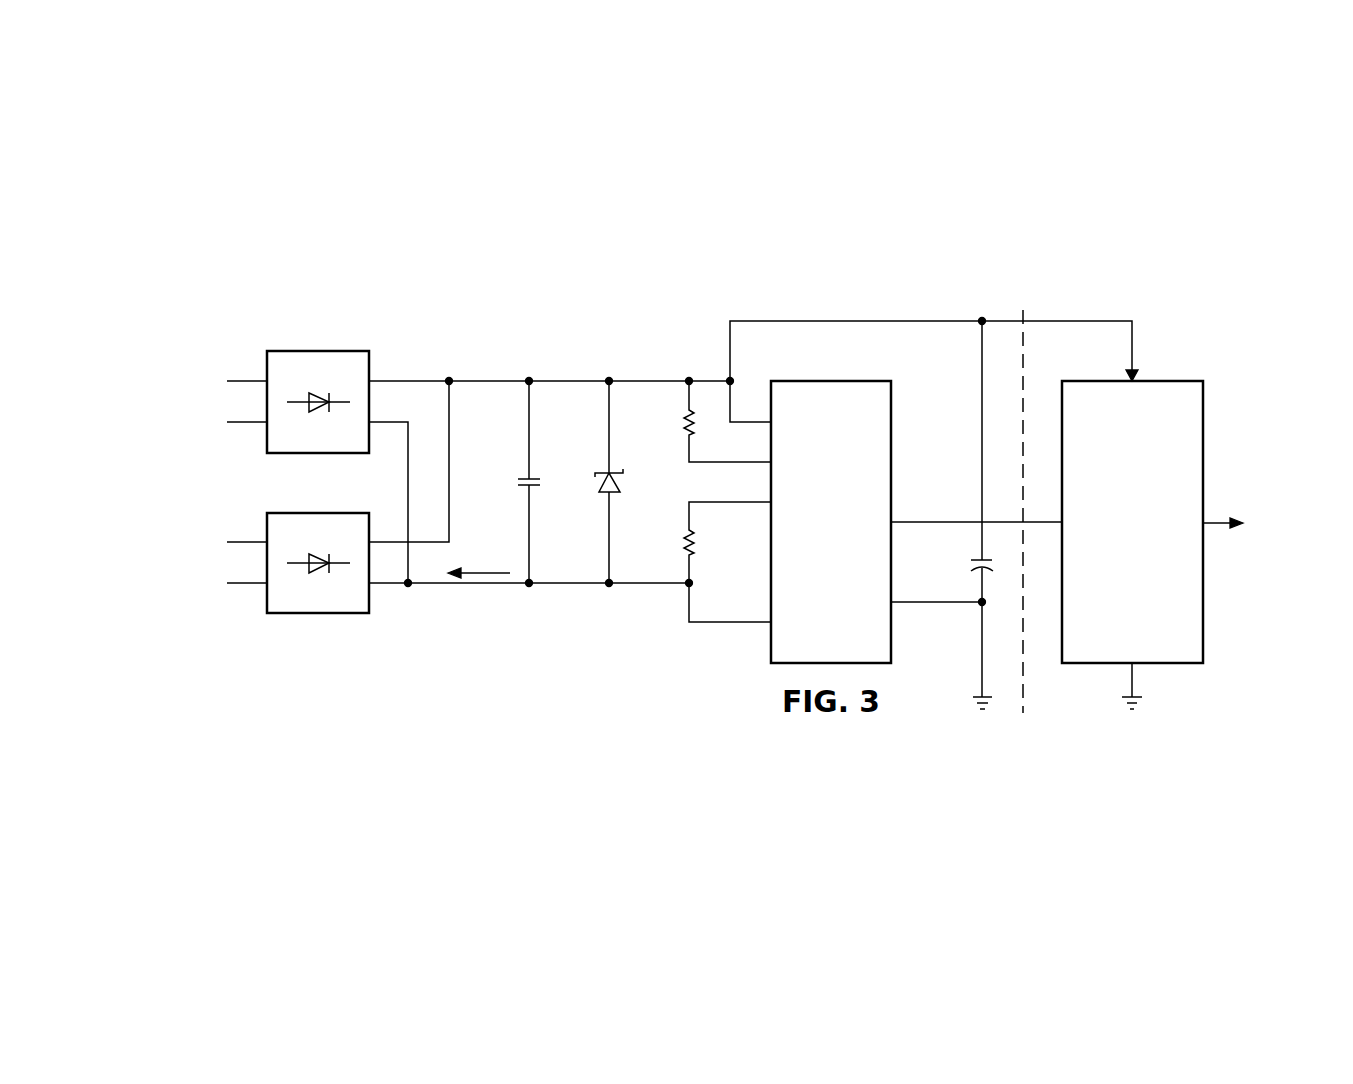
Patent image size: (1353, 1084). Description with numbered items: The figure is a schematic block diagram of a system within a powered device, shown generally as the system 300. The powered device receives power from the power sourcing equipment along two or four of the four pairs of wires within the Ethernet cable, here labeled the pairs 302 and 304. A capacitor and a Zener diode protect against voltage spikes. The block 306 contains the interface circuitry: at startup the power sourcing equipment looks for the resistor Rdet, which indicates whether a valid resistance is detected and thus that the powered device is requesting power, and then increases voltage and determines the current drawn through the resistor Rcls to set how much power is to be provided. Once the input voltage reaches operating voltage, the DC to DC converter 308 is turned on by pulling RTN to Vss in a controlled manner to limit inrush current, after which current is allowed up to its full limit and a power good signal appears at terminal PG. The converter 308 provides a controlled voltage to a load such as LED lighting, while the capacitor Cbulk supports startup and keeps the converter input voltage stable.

The system within a PD 300 is at (508, 360).
The pairs of wires within the Ethernet cable 302 is at (318, 351).
The pairs of wires within the Ethernet cable 304 is at (318, 613).
The block 306 is at (830, 381).
The DC to DC converter 308 is at (1157, 381).